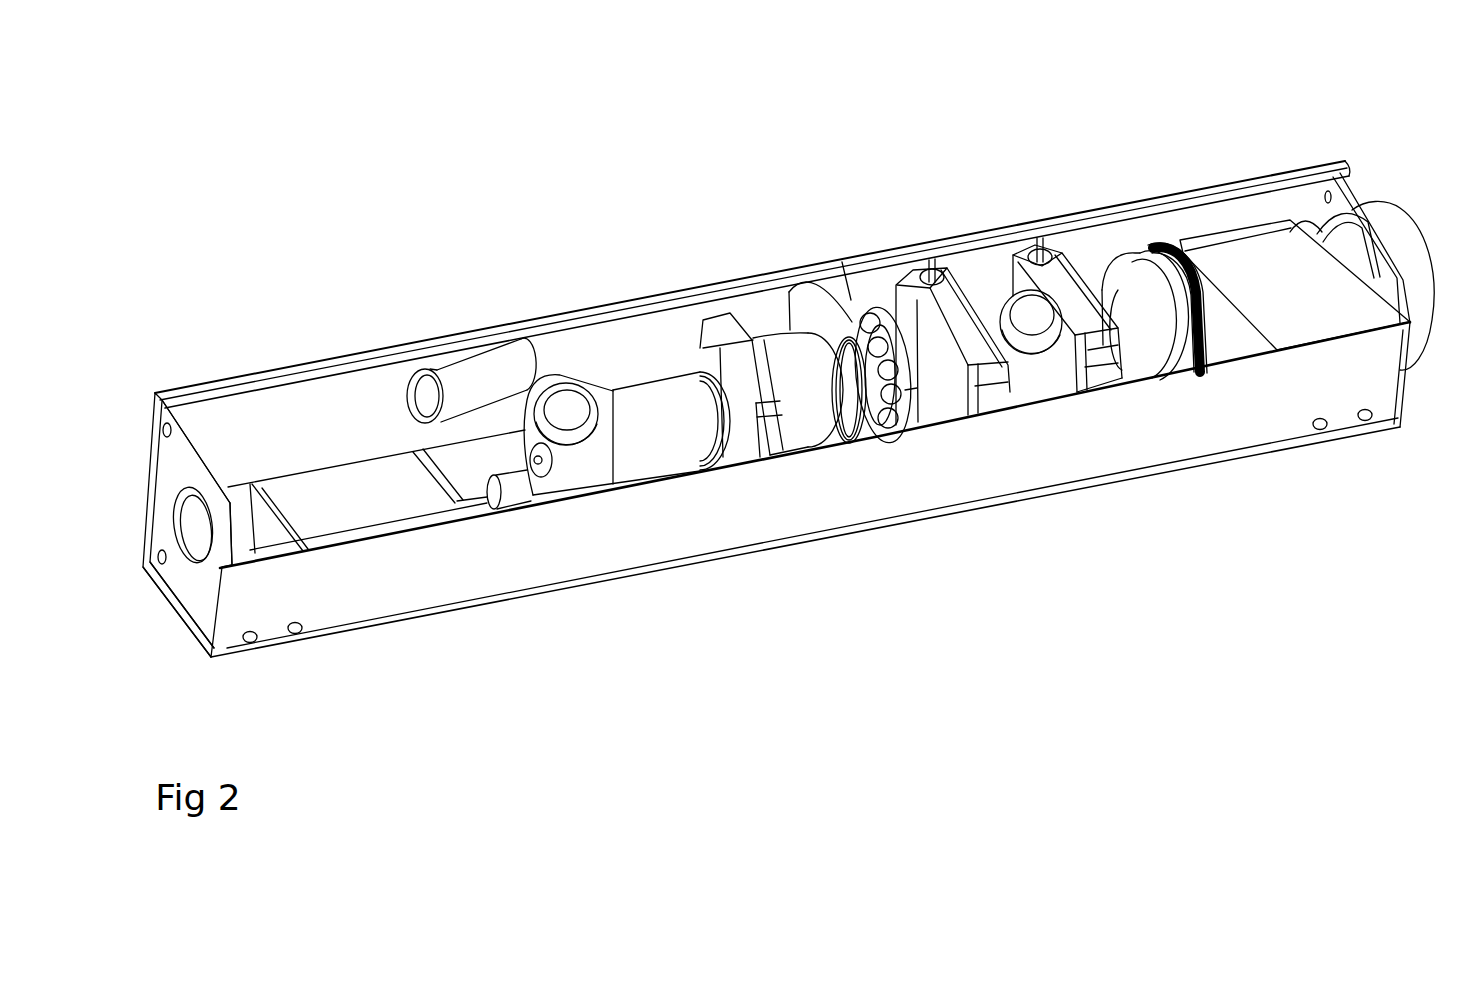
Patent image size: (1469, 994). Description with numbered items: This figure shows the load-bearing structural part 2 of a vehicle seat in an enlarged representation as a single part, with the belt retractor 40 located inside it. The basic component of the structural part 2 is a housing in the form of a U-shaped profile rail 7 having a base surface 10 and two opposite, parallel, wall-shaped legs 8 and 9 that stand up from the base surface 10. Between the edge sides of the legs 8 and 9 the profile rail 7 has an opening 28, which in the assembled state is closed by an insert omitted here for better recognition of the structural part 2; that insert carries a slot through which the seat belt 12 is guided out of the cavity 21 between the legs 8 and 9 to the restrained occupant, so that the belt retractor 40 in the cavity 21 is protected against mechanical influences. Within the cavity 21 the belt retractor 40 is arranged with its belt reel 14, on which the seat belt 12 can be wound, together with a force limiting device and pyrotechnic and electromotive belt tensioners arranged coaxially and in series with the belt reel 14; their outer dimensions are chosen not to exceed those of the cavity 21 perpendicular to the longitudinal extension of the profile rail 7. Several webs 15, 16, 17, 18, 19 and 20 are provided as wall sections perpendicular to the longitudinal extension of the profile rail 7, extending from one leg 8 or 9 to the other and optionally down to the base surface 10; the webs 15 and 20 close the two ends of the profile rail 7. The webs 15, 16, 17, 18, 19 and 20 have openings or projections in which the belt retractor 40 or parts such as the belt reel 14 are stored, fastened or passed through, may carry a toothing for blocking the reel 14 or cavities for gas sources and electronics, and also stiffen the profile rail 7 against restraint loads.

The load-bearing structural part 2 is at (600, 270).
The profile rail 7 is at (272, 400).
The leg 8 is at (317, 392).
The leg 9 is at (430, 576).
The base surface 10 is at (175, 610).
The seat belt 12 is at (1313, 273).
The belt reel 14 is at (1147, 278).
The web 15 is at (1360, 217).
The web 16 is at (1016, 256).
The web 17 is at (913, 273).
The web 18 is at (880, 277).
The web 19 is at (760, 432).
The web 20 is at (205, 583).
The cavity 21 is at (462, 460).
The opening 28 is at (1103, 373).
The belt retractor 40 is at (1187, 215).